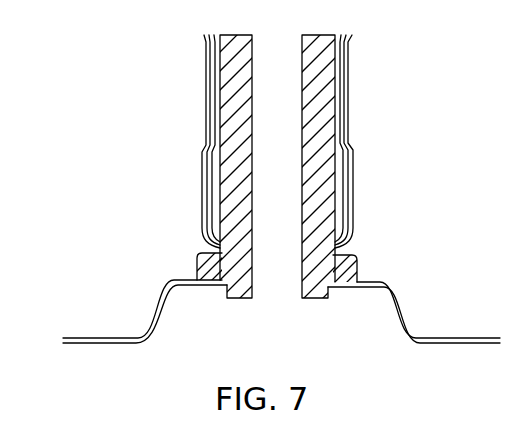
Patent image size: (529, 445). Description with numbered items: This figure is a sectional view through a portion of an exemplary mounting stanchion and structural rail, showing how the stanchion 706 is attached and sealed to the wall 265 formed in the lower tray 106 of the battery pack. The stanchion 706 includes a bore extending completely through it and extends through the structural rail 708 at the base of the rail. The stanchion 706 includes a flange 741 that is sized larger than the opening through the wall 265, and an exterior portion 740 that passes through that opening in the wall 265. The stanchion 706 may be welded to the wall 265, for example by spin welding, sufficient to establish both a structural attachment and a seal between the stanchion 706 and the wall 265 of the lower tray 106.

The stanchion 706 is at (215, 112).
The structural rail 708 is at (203, 173).
The exterior portion 740 is at (238, 298).
The flange 741 is at (350, 255).
The wall 265 is at (150, 322).
The lower tray 106 is at (450, 310).